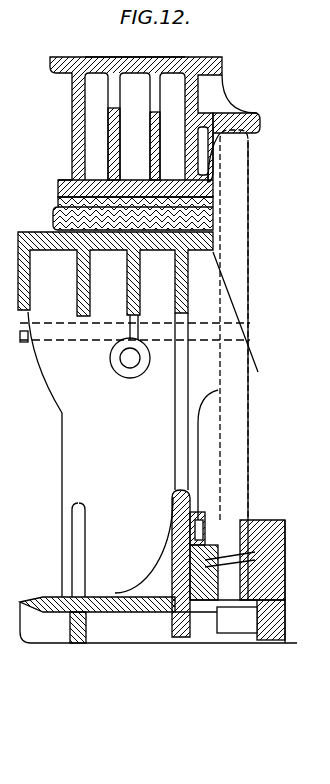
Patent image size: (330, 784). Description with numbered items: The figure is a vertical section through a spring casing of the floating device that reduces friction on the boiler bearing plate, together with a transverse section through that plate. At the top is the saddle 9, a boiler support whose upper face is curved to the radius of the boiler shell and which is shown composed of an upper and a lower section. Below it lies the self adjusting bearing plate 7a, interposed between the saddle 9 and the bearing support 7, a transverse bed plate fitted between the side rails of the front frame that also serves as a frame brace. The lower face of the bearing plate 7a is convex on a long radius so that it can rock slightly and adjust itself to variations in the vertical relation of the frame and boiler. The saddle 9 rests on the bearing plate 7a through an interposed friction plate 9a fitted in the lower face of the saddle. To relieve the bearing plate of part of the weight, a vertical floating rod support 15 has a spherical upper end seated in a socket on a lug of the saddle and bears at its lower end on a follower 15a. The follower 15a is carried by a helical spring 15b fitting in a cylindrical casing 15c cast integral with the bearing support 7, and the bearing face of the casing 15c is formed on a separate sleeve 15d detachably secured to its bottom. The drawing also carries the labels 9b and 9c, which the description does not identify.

The saddle 9 is at (149, 127).
The friction plate 9a is at (262, 118).
The cylinder head guide portion 9b is at (266, 137).
The cylinder head passage 9c is at (209, 200).
The bearing support 7 is at (157, 437).
The self adjusting bearing plate 7a is at (53, 222).
The floating rod support 15 is at (235, 365).
The follower 15a is at (216, 634).
The helical spring 15b is at (255, 522).
The cylindrical casing 15c is at (288, 558).
The sleeve 15d is at (288, 580).